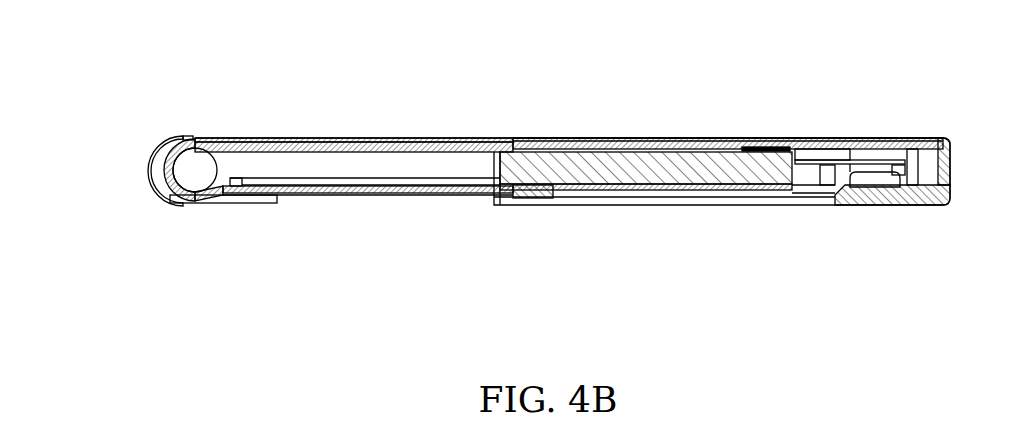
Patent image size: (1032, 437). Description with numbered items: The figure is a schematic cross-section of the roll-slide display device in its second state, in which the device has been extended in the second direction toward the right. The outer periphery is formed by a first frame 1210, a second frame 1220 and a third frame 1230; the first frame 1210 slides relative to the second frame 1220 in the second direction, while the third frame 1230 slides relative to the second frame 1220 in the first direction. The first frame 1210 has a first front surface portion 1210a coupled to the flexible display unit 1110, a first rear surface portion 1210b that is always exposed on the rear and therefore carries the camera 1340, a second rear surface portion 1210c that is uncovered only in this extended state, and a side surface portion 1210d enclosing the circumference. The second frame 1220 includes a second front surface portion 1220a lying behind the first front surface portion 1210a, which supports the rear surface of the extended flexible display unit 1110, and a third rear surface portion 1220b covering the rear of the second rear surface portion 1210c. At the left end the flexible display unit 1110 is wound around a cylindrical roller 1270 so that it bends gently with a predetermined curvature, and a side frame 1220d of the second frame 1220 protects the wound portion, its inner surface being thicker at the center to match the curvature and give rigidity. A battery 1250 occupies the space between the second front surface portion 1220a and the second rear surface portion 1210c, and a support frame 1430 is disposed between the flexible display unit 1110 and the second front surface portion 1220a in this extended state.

The flexible display unit 1110 is at (603, 137).
The first frame 1210 is at (739, 116).
The first front surface portion 1210a is at (806, 137).
The first rear surface portion 1210b is at (858, 193).
The second rear surface portion 1210c is at (750, 145).
The side surface portion 1210d is at (955, 127).
The second frame 1220 is at (360, 224).
The second front surface portion 1220a is at (472, 145).
The third rear surface portion 1220b is at (528, 197).
The side frame 1220d is at (160, 152).
The third frame 1230 is at (243, 202).
The battery 1250 is at (660, 158).
The roller 1270 is at (182, 170).
The camera 1340 is at (885, 180).
The support frame 1430 is at (404, 142).